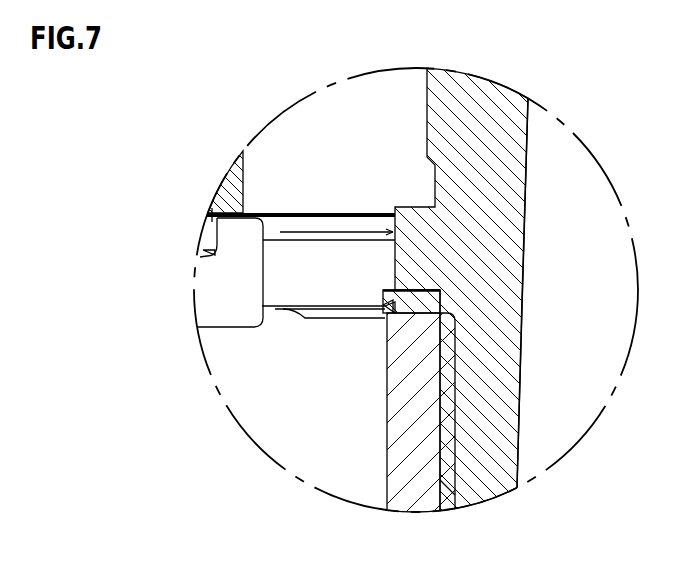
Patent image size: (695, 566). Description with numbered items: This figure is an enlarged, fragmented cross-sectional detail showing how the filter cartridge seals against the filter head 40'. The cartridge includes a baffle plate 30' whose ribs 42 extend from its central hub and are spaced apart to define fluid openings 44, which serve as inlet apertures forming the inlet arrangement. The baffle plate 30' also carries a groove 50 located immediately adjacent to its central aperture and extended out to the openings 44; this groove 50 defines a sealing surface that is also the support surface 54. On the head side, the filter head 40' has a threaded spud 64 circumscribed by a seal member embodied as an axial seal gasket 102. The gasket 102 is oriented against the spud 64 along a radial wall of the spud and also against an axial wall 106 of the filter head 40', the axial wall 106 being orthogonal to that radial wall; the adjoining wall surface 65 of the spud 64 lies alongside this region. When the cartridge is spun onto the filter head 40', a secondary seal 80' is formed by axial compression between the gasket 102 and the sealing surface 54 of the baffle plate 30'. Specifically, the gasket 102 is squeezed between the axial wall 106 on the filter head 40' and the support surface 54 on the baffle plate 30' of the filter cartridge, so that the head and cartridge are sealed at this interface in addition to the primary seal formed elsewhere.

The baffle plate 30' is at (264, 238).
The filter head 40' is at (480, 273).
The ribs 42 is at (316, 461).
The fluid openings 44 is at (262, 258).
The groove 50 is at (365, 279).
The support surface 54 is at (393, 314).
The spud 64 is at (522, 337).
The outer wall lower portion 65 is at (517, 437).
The secondary seal 80' is at (382, 412).
The axial seal gasket 102 is at (386, 308).
The axial wall 106 is at (423, 290).